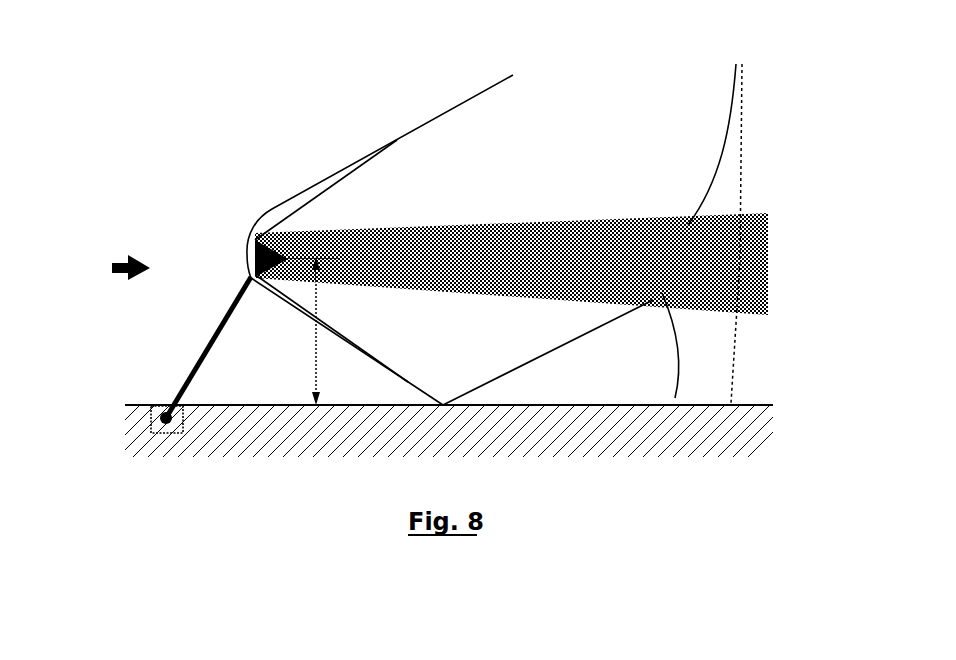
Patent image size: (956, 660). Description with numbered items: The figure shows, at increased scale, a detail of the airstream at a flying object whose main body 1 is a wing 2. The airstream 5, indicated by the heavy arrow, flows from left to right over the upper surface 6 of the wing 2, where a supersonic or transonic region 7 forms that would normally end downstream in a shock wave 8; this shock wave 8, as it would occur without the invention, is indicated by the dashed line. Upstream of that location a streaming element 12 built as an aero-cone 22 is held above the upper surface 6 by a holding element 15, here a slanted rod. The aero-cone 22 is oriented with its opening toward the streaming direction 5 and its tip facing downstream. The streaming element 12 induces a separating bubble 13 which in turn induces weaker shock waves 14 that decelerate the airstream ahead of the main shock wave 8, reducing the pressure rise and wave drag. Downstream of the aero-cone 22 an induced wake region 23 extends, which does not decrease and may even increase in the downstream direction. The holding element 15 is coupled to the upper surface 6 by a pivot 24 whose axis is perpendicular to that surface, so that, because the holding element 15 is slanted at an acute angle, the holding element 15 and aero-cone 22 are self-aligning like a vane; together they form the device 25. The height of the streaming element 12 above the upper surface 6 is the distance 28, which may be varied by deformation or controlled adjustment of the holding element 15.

The main body 1 is at (436, 455).
The wing 2 is at (572, 438).
The airstream 5 is at (117, 259).
The upper surface 6 is at (250, 405).
The supersonic or transonic region 7 is at (356, 145).
The shock wave 8 is at (742, 157).
The streaming element 12 is at (281, 202).
The separating bubble 13 is at (468, 340).
The weaker shock waves 14 is at (358, 348).
The holding element 15 is at (202, 352).
The aero-cone 22 is at (272, 250).
The induced wake region 23 is at (557, 243).
The pivot 24 is at (164, 421).
The device 25 is at (202, 303).
The distance 28 is at (318, 310).